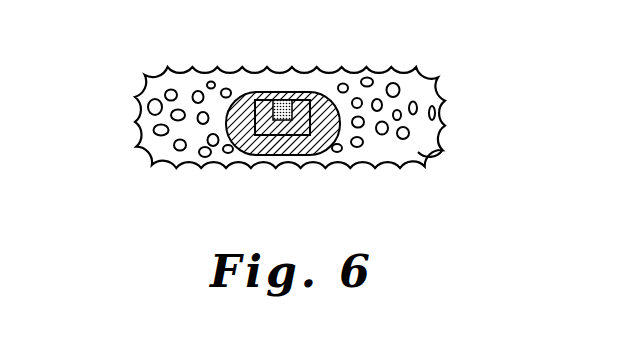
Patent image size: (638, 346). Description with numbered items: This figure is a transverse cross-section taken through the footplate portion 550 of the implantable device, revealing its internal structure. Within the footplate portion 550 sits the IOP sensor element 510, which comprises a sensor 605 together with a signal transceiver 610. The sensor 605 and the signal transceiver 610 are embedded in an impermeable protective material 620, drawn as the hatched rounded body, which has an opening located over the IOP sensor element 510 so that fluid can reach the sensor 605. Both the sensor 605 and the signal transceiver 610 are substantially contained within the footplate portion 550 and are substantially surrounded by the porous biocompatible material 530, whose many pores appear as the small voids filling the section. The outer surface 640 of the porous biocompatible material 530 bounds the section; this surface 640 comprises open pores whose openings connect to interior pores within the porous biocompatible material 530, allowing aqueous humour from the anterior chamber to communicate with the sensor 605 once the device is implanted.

The footplate portion 550 is at (133, 81).
The porous biocompatible material 530 is at (443, 98).
The outer surface 640 is at (418, 152).
The impermeable protective material 620 is at (320, 143).
The signal transceiver 610 is at (311, 99).
The sensor 605 is at (285, 100).
The IOP sensor element 510 is at (255, 79).